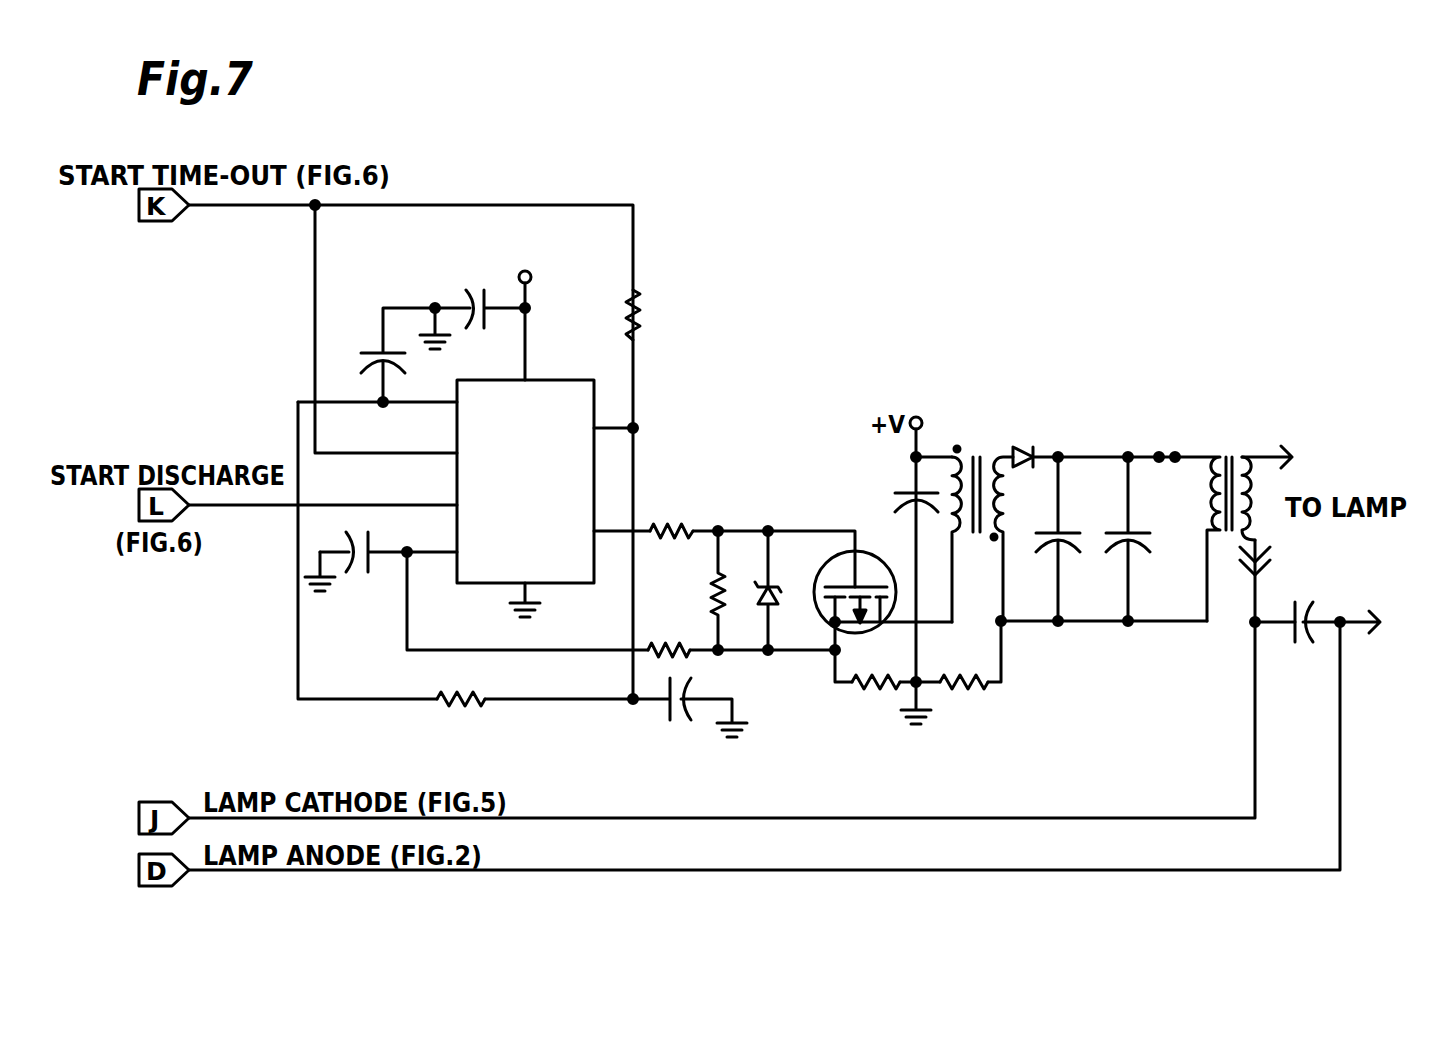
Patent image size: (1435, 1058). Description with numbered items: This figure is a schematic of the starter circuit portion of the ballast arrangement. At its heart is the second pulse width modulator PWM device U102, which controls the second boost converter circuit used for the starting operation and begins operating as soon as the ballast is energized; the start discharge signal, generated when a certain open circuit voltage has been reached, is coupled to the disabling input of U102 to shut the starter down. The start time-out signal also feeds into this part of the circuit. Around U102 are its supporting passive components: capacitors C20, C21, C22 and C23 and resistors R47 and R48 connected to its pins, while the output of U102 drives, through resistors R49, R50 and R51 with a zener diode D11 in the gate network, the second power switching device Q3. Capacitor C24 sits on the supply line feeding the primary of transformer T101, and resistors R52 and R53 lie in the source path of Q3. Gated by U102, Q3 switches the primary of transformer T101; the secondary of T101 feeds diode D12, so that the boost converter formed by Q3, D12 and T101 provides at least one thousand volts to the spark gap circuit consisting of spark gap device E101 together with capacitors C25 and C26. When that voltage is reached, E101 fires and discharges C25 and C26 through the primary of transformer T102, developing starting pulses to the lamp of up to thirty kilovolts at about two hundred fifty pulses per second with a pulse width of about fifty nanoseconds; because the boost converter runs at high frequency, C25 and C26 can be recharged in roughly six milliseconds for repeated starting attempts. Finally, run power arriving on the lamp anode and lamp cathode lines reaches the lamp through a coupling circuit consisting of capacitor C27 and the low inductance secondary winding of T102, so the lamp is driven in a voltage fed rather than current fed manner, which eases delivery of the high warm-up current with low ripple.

The second pulse width modulator PWM device U102 is at (528, 462).
The capacitor C20 is at (475, 292).
The capacitor C21 is at (360, 352).
The capacitor C22 is at (358, 572).
The capacitor C23 is at (678, 718).
The capacitor C24 is at (900, 500).
The capacitor C25 is at (1070, 536).
The capacitor C26 is at (1140, 536).
The capacitor C27 is at (1303, 602).
The resistor R47 is at (640, 308).
The resistor R48 is at (462, 705).
The resistor R49 is at (683, 504).
The resistor R50 is at (712, 598).
The resistor R51 is at (652, 646).
The resistor R52 is at (868, 692).
The resistor R53 is at (968, 690).
The zener diode D11 is at (758, 583).
The diode D12 is at (1018, 449).
The second power switching device Q3 is at (815, 596).
The transformer T101 is at (978, 450).
The transformer T102 is at (1228, 450).
The spark gap device E101 is at (1163, 452).